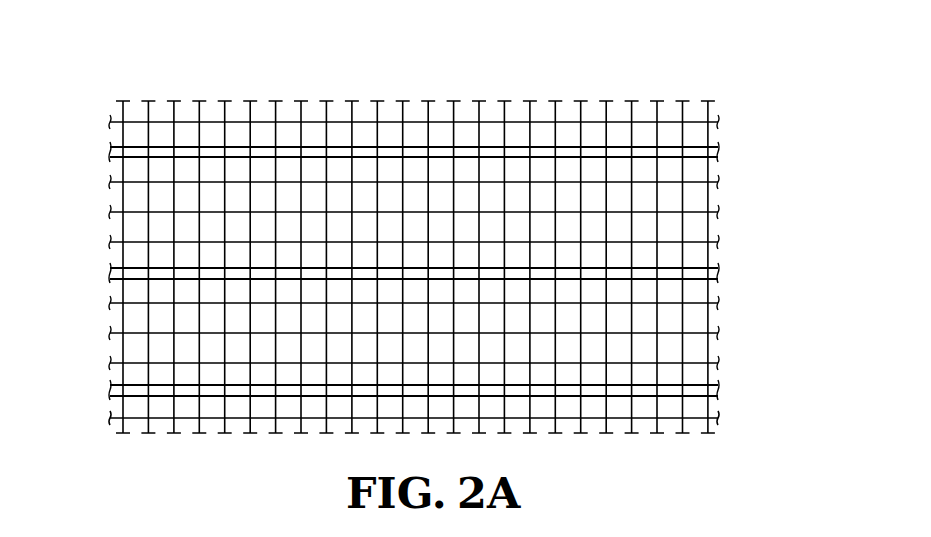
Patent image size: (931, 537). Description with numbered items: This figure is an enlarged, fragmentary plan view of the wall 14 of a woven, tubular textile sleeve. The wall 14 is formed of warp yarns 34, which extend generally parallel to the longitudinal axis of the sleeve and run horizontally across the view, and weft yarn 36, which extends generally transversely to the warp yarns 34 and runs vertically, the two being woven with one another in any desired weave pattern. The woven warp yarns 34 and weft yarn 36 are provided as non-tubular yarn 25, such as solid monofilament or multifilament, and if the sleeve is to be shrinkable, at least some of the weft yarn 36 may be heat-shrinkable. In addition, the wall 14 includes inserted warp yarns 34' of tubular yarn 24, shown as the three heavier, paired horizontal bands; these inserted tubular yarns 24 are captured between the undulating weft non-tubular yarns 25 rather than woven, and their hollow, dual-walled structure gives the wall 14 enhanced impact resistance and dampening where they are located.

The wall 14 is at (418, 233).
The weft yarn 36 is at (548, 101).
The non-tubular yarn 25 is at (710, 110).
The tubular yarn 24 is at (378, 247).
The inserted warp yarn 34' is at (378, 247).
The warp yarn 34 is at (443, 431).